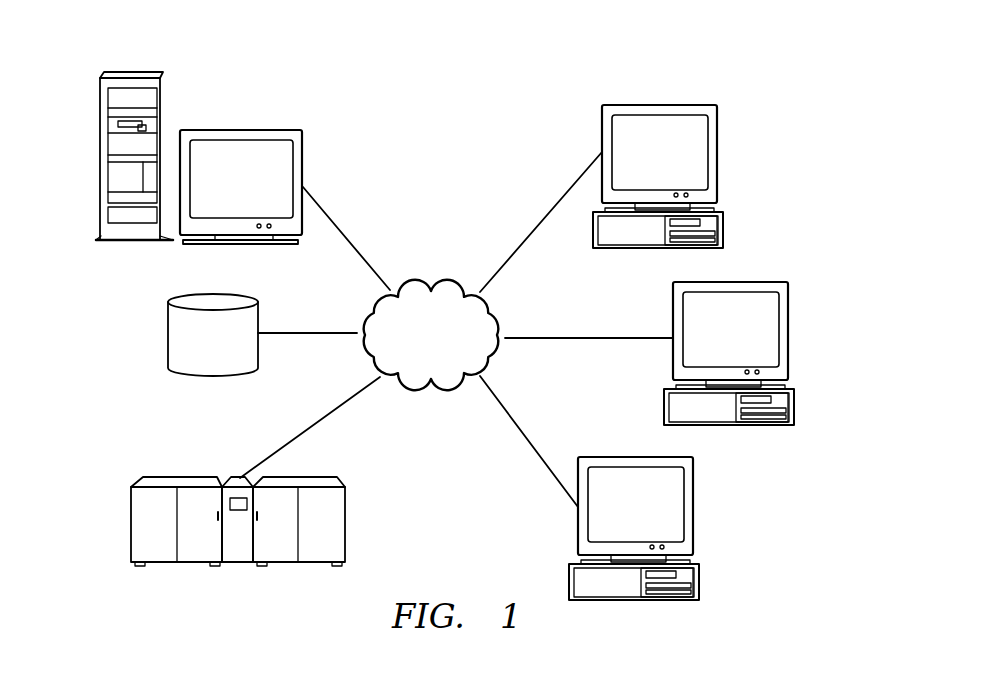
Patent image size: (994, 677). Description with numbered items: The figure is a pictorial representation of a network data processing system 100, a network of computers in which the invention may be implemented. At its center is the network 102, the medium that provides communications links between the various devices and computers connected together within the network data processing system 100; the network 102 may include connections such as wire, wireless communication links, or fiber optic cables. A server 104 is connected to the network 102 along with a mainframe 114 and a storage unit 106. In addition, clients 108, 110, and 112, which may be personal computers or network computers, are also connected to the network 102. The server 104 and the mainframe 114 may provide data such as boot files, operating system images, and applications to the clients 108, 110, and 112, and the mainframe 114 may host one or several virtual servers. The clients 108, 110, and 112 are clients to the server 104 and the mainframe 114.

The network data processing system 100 is at (772, 193).
The network 102 is at (453, 345).
The server 104 is at (264, 190).
The storage unit 106 is at (168, 333).
The client 108 is at (682, 165).
The client 110 is at (753, 341).
The client 112 is at (658, 516).
The mainframe 114 is at (131, 521).